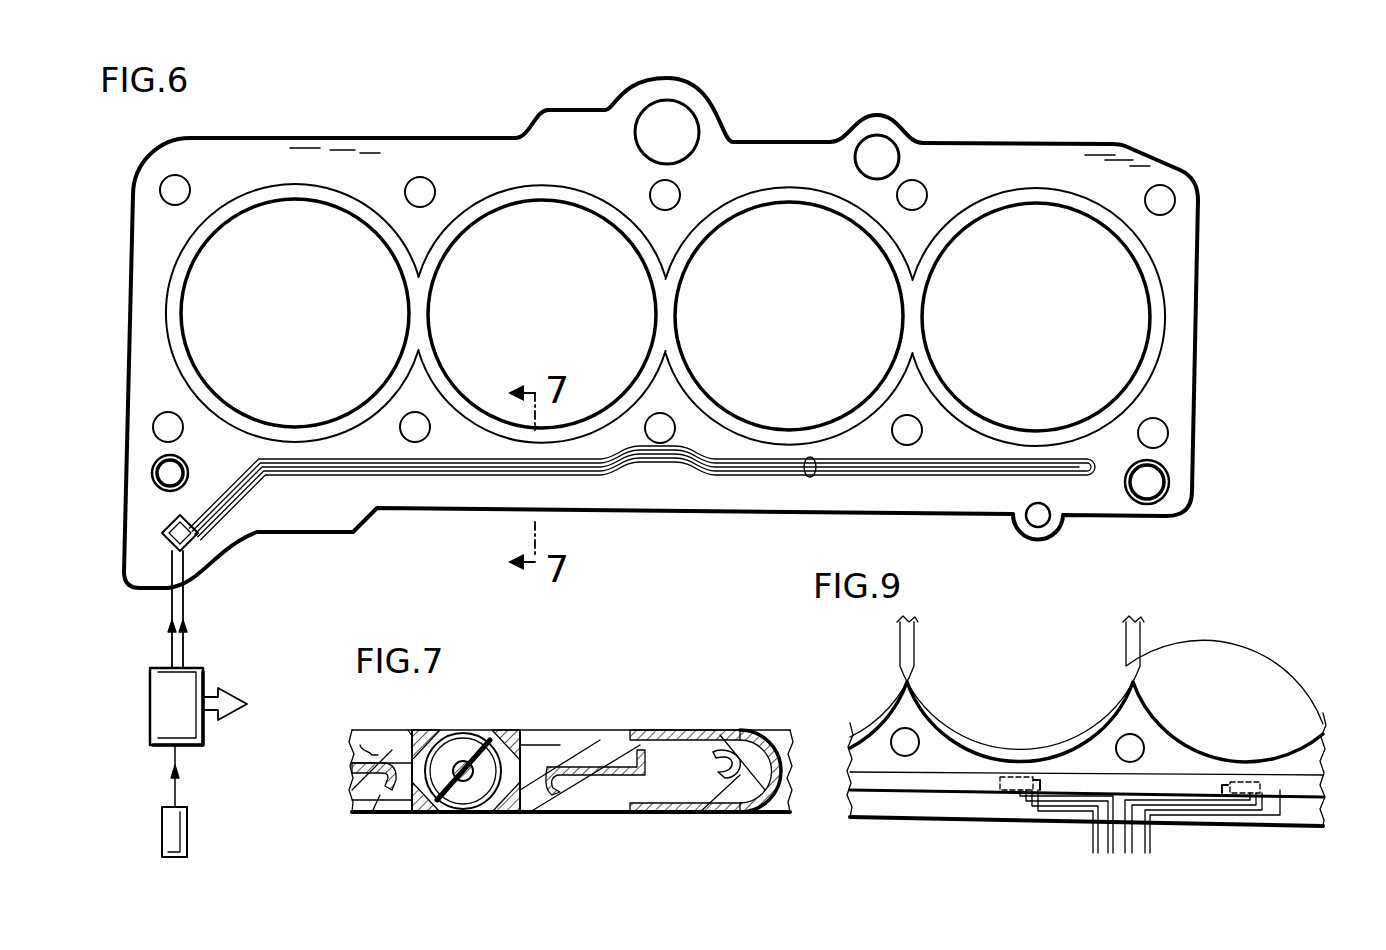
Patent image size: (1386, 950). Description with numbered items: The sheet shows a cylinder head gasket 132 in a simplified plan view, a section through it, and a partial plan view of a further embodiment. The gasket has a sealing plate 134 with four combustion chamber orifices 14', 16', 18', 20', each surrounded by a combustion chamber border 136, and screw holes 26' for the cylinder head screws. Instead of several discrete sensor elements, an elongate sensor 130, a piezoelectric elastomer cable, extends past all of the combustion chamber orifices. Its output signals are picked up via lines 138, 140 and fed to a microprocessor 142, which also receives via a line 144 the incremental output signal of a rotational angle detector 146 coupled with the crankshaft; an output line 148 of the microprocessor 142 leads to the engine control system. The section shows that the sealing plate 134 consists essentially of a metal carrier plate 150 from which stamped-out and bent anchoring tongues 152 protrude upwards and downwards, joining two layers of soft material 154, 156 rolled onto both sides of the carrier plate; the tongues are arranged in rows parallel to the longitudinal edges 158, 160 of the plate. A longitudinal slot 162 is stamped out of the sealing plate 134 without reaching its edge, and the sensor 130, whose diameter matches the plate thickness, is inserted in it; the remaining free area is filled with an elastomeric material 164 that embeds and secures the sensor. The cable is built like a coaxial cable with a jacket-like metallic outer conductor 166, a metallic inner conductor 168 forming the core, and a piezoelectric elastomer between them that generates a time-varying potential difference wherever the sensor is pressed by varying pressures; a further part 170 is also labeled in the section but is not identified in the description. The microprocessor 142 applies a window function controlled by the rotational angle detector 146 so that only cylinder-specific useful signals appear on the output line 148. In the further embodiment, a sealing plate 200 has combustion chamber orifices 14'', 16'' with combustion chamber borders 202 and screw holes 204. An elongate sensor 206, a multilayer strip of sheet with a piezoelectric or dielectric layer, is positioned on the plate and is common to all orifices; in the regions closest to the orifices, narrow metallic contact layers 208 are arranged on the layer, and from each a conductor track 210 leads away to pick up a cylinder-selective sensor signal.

In FIG. 6, the combustion chamber orifice 14' is at (1039, 317).
In FIG. 6, the combustion chamber orifice 16' is at (789, 315).
In FIG. 6, the combustion chamber orifice 18' is at (542, 313).
In FIG. 7, the combustion chamber orifice 18' is at (810, 837).
In FIG. 6, the combustion chamber orifice 20' is at (292, 313).
In FIG. 6, the screw holes 26' is at (711, 255).
In FIG. 6, the elongate sensor 130 is at (438, 476).
In FIG. 7, the elongate sensor 130 is at (494, 828).
In FIG. 6, the cylinder head gasket 132 is at (1208, 282).
In FIG. 7, the cylinder head gasket 132 is at (644, 822).
In FIG. 6, the sealing plate 134 is at (1199, 378).
In FIG. 7, the sealing plate 134 is at (346, 746).
In FIG. 6, the combustion chamber border 136 is at (230, 222).
In FIG. 7, the combustion chamber border 136 is at (772, 740).
In FIG. 6, the line 138 is at (172, 645).
In FIG. 6, the line 140 is at (186, 600).
In FIG. 6, the microprocessor 142 is at (192, 668).
In FIG. 6, the line 144 is at (176, 785).
In FIG. 6, the rotational angle detector 146 is at (188, 838).
In FIG. 6, the output line 148 is at (212, 712).
In FIG. 7, the metal carrier plate 150 is at (368, 778).
In FIG. 7, the anchoring tongues 152 is at (640, 735).
In FIG. 7, the layer of soft material 154 is at (375, 736).
In FIG. 7, the layer of soft material 156 is at (370, 808).
In FIG. 6, the longitudinal edge 158 is at (662, 512).
In FIG. 6, the longitudinal edge 160 is at (1058, 145).
In FIG. 6, the longitudinal slot 162 is at (810, 478).
In FIG. 7, the longitudinal slot 162 is at (448, 738).
In FIG. 6, the elastomeric material 164 is at (965, 478).
In FIG. 7, the elastomeric material 164 is at (505, 738).
In FIG. 7, the outer conductor 166 is at (418, 812).
In FIG. 7, the inner conductor 168 is at (467, 782).
In FIG. 7, the filler 170 is at (510, 810).
In FIG. 9, the sealing plate 200 is at (875, 740).
In FIG. 9, the combustion chamber border 202 is at (1005, 750).
In FIG. 9, the screw holes 204 is at (908, 730).
In FIG. 9, the elongate sensor 206 is at (958, 806).
In FIG. 9, the metallic contact layers 208 is at (1000, 792).
In FIG. 9, the conductor track 210 is at (1085, 812).
In FIG. 9, the combustion chamber orifice 14'' is at (1285, 703).
In FIG. 9, the combustion chamber orifice 16'' is at (1077, 683).